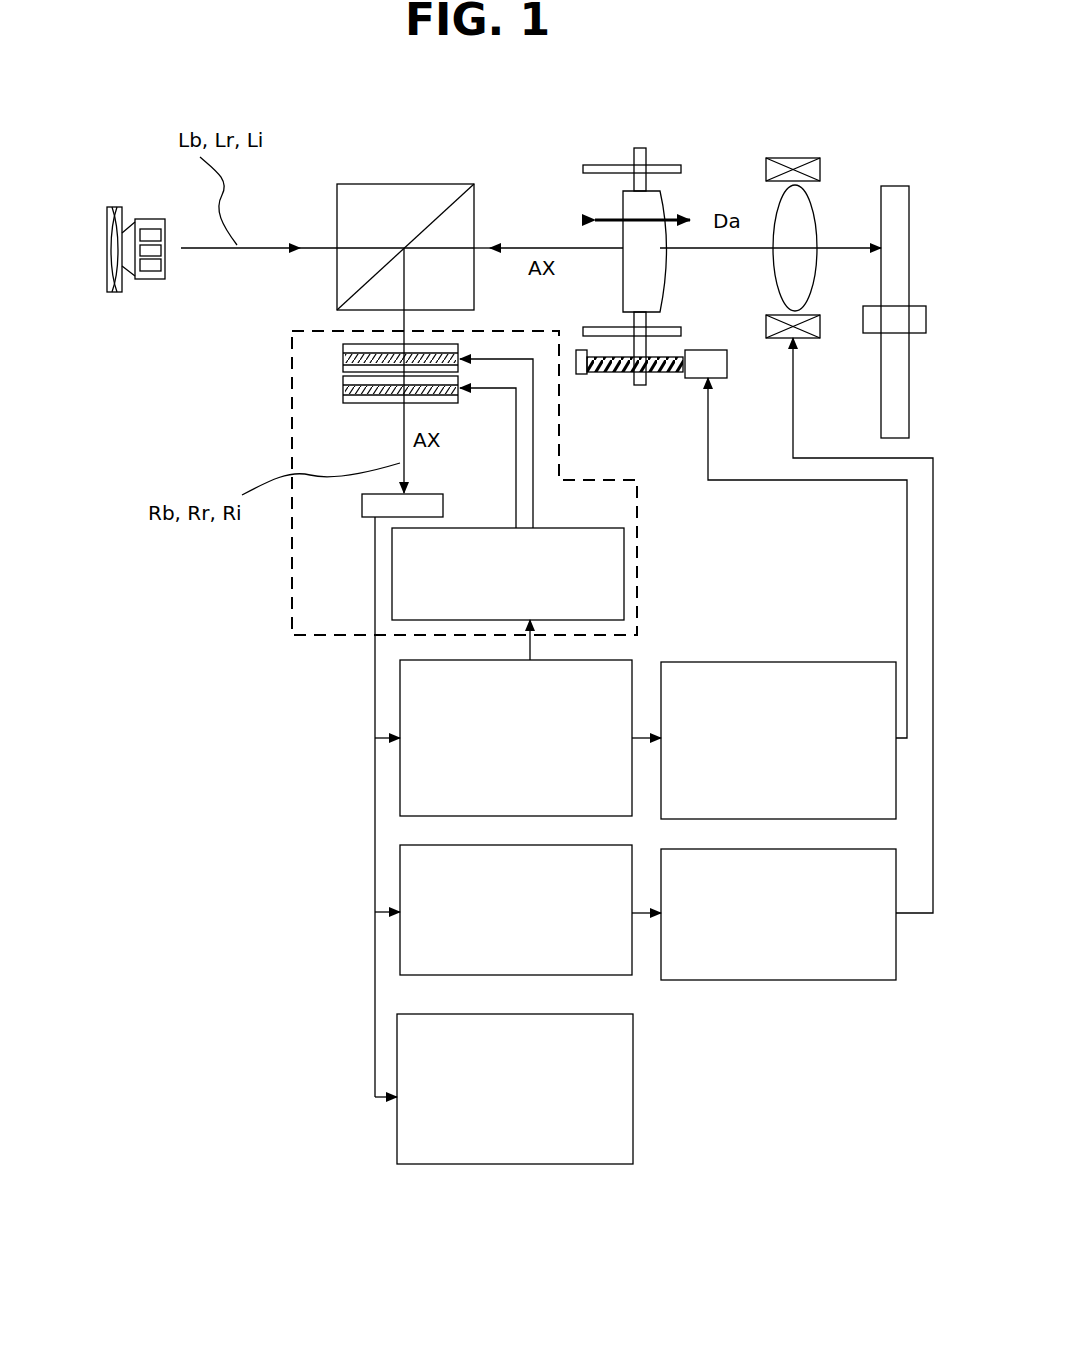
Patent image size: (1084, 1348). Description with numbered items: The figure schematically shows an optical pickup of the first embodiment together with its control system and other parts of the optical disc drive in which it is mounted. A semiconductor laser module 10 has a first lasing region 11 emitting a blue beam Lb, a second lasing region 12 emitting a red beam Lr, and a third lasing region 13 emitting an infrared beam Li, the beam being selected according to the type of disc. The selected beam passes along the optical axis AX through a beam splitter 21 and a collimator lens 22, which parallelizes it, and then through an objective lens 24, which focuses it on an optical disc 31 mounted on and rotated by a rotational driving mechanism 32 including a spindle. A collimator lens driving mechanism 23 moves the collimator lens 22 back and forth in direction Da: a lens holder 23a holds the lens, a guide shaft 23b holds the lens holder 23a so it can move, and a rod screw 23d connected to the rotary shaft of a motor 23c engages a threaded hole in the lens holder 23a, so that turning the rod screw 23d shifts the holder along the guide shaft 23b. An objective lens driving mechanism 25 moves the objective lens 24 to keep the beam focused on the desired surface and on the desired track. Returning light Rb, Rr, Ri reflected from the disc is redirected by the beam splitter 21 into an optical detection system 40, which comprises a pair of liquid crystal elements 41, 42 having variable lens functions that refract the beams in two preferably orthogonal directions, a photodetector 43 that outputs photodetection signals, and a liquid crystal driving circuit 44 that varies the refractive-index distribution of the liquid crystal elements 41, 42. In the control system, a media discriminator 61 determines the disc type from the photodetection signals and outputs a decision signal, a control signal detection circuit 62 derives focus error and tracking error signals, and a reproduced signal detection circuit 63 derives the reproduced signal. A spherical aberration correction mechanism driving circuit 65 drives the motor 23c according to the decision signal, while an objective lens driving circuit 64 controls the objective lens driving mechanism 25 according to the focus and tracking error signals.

The semiconductor laser module 10 is at (148, 220).
The first lasing region 11 is at (140, 231).
The second lasing region 12 is at (140, 250).
The third lasing region 13 is at (140, 268).
The beam splitter 21 is at (365, 183).
The collimator lens 22 is at (653, 203).
The collimator lens driving mechanism 23 is at (635, 263).
The lens holder 23a is at (636, 152).
The guide shaft 23b is at (588, 165).
The motor 23c is at (703, 367).
The rod screw 23d is at (613, 372).
The objective lens 24 is at (793, 278).
The objective lens driving mechanism 25 is at (797, 162).
The optical disc 31 is at (884, 186).
The rotational driving mechanism 32 is at (918, 308).
The optical detection system 40 is at (424, 483).
The liquid crystal element 41 is at (343, 360).
The liquid crystal element 42 is at (343, 388).
The photodetector 43 is at (370, 508).
The liquid crystal driving circuit 44 is at (630, 563).
The media discriminator 61 is at (405, 710).
The control signal detection circuit 62 is at (405, 865).
The reproduced signal detection circuit 63 is at (397, 1110).
The objective lens driving circuit 64 is at (775, 982).
The spherical aberration correction mechanism driving circuit 65 is at (761, 662).